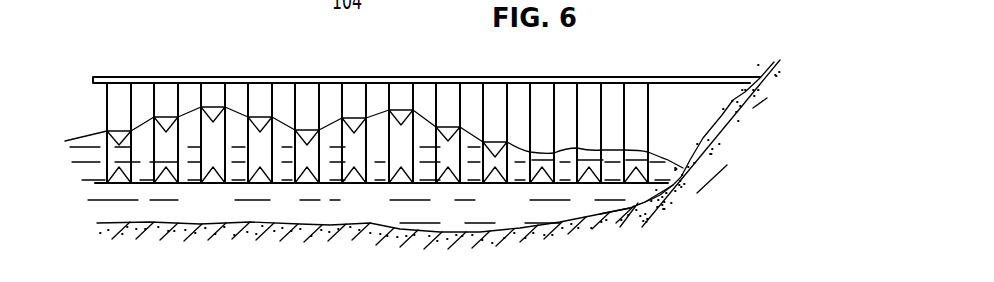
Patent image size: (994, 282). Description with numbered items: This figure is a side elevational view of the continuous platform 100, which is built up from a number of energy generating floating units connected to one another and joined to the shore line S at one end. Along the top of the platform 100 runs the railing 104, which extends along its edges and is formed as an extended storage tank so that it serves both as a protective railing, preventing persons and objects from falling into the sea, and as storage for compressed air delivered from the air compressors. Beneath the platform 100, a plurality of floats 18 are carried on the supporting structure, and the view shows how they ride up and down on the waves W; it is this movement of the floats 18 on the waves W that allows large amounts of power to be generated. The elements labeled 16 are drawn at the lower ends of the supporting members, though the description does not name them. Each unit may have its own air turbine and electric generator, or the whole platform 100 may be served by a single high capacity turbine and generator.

The continuous platform 100 is at (426, 120).
The railing 104 is at (253, 78).
The float 18 is at (307, 128).
The base anchor 16 is at (213, 180).
The waves W is at (87, 137).
The shore line S is at (740, 88).